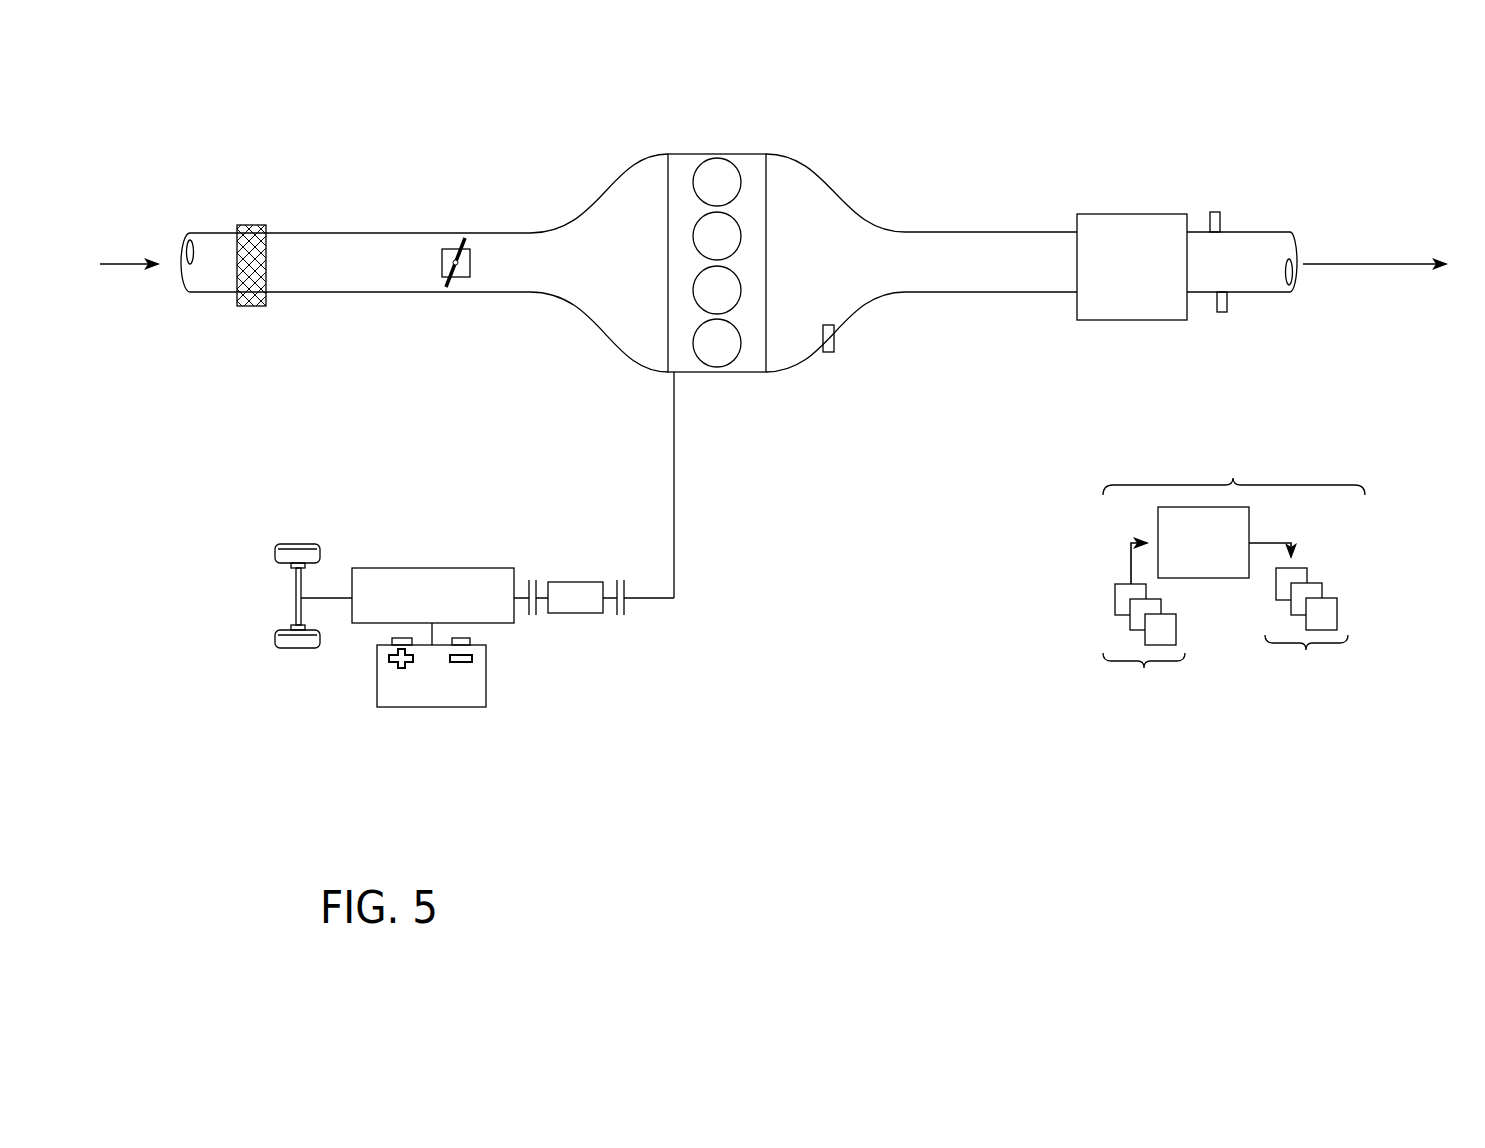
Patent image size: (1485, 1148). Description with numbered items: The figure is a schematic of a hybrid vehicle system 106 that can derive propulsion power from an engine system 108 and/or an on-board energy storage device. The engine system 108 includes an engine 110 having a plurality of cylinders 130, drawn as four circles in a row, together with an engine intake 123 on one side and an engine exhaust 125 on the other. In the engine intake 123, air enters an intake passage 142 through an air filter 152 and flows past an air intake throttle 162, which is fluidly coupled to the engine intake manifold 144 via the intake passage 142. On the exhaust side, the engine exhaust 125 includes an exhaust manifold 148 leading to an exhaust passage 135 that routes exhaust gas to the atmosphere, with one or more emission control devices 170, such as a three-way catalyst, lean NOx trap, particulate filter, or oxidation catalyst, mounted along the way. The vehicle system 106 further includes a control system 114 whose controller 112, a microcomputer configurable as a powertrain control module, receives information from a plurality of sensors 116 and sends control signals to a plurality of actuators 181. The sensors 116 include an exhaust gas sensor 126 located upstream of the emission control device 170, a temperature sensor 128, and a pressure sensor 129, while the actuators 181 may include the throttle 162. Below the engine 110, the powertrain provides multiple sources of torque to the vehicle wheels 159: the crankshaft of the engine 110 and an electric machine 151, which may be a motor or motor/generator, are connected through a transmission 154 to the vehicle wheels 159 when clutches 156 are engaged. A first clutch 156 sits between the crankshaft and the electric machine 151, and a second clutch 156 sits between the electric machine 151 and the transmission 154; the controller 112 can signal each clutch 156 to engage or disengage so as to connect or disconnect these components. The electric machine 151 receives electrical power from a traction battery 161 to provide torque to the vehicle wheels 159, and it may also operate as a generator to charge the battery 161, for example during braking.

The hybrid vehicle system 106 is at (197, 128).
The engine system 108 is at (1328, 126).
The engine 110 is at (766, 245).
The controller 112 is at (1203, 542).
The control system 114 is at (1234, 463).
The sensors 116 is at (1144, 626).
The engine intake 123 is at (588, 180).
The engine exhaust 125 is at (887, 188).
The exhaust gas sensor 126 is at (836, 331).
The temperature sensor 128 is at (1222, 312).
The pressure sensor 129 is at (1216, 212).
The cylinders 130 is at (741, 174).
The exhaust passage 135 is at (1270, 232).
The intake passage 142 is at (213, 293).
The intake manifold 144 is at (639, 271).
The exhaust manifold 148 is at (859, 271).
The electric machine 151 is at (578, 615).
The air filter 152 is at (252, 225).
The transmission 154 is at (376, 626).
The clutches 156 is at (536, 580).
The vehicle wheels 159 is at (296, 650).
The traction battery 161 is at (437, 708).
The air intake throttle 162 is at (470, 269).
The emission control device 170 is at (1118, 214).
The actuators 181 is at (1298, 617).